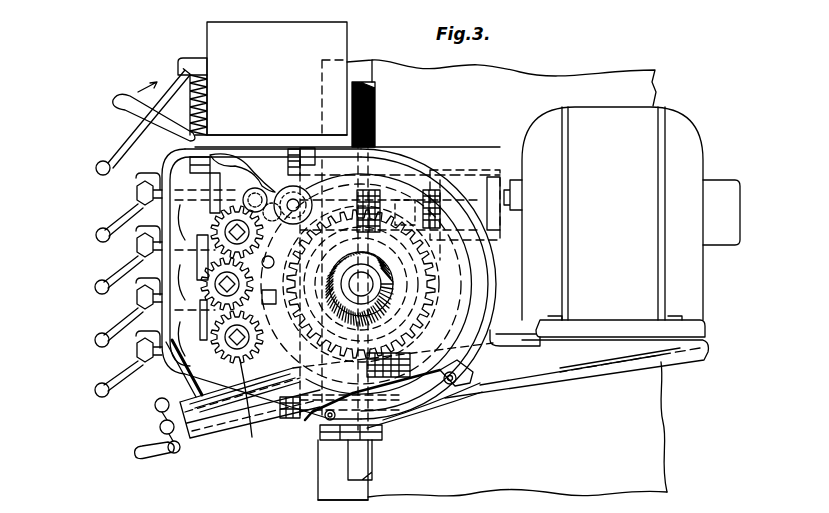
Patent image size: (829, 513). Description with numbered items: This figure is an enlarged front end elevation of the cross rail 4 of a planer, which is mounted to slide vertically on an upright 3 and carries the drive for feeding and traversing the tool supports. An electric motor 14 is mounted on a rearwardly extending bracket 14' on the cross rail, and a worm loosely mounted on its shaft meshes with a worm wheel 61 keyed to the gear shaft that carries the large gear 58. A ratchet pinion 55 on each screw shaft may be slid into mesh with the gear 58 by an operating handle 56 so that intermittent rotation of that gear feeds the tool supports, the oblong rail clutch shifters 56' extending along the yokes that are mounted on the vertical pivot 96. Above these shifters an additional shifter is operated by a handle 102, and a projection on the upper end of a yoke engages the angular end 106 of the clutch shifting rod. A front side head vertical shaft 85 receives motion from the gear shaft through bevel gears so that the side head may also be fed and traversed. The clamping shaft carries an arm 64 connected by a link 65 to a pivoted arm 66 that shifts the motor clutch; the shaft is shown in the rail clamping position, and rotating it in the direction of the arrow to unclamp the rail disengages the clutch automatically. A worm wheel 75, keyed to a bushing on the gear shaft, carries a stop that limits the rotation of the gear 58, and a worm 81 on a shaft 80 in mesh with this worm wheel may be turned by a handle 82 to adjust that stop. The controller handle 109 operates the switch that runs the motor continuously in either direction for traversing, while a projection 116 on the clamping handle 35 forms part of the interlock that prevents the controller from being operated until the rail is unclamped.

The upright 3 is at (668, 486).
The cross rail 4 is at (181, 508).
The electric motor 14 is at (615, 222).
The rearwardly extending bracket 14' is at (576, 376).
The clamping handle 35 is at (113, 100).
The ratchet pinion 55 is at (253, 409).
The operating handle 56 is at (100, 311).
The rail clutch shifter 56' is at (166, 368).
The large gear 58 is at (478, 286).
The worm wheel 61 is at (371, 284).
The arm 64 is at (242, 284).
The link 65 is at (440, 281).
The arm 66 is at (377, 284).
The worm wheel 75 is at (440, 302).
The shaft 80 is at (202, 430).
The worm 81 is at (410, 417).
The handle 82 is at (135, 455).
The front side head vertical shaft 85 is at (377, 96).
The vertical pivot 96 is at (292, 424).
The handle 102 is at (118, 223).
The angular end 106 is at (256, 192).
The controller handle 109 is at (100, 163).
The projection 116 is at (246, 180).